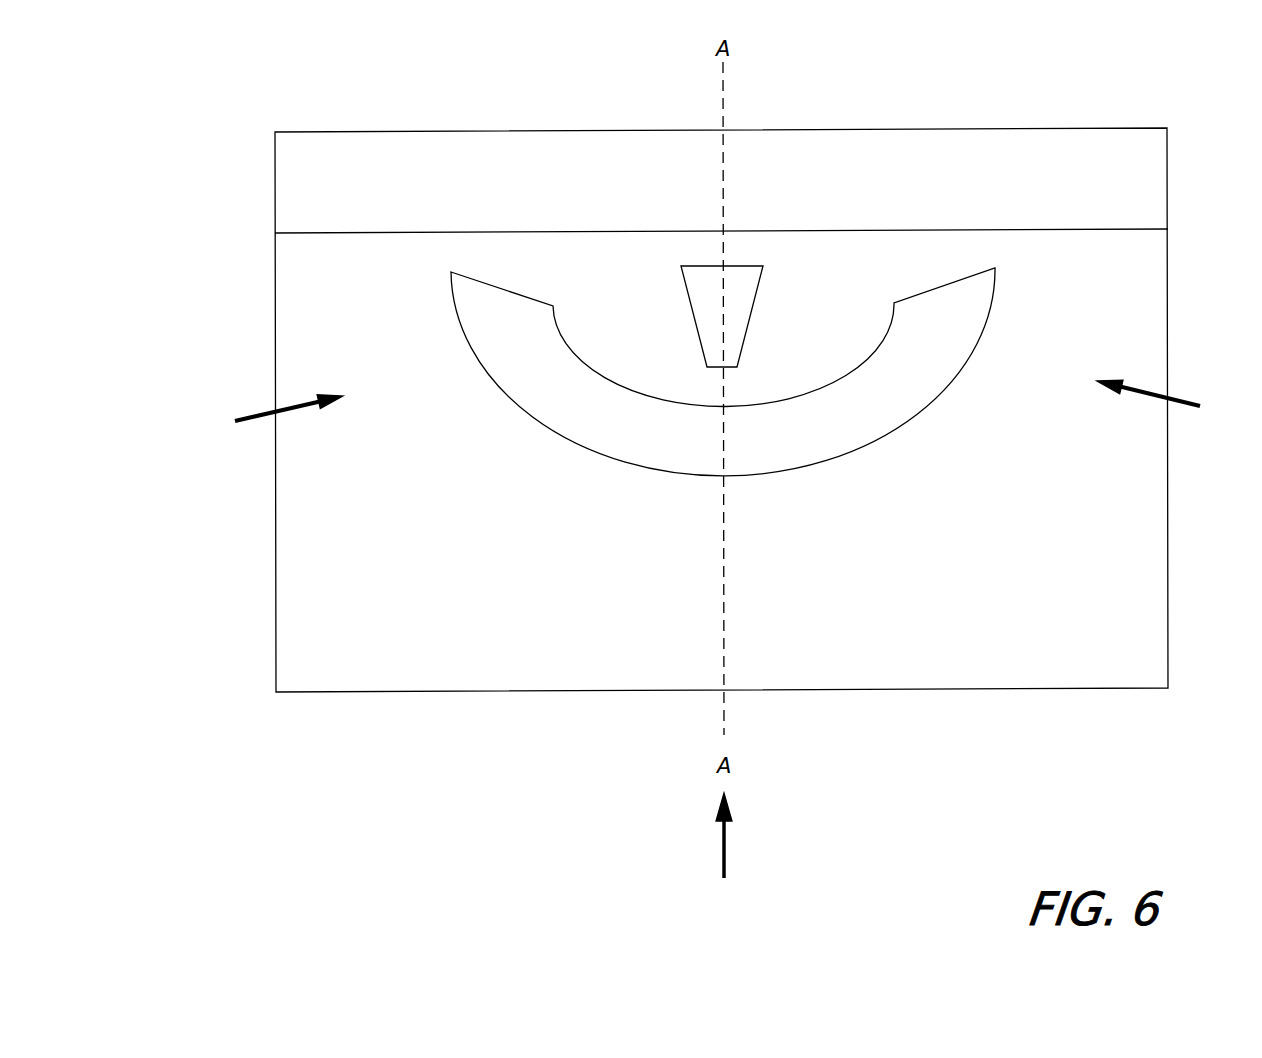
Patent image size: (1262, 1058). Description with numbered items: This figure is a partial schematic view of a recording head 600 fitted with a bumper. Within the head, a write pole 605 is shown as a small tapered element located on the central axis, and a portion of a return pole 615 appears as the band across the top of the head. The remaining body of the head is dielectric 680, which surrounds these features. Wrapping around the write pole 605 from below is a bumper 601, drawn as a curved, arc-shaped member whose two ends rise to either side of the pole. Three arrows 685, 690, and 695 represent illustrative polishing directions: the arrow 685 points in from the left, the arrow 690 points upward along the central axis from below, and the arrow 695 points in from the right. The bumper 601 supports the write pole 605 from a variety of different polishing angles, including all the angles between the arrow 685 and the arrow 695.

The recording head 600 is at (721, 466).
The bumper 601 is at (808, 423).
The write pole 605 is at (705, 304).
The return pole 615 is at (383, 179).
The dielectric 680 is at (537, 542).
The arrow 685 is at (265, 413).
The arrow 690 is at (721, 845).
The arrow 695 is at (1190, 400).